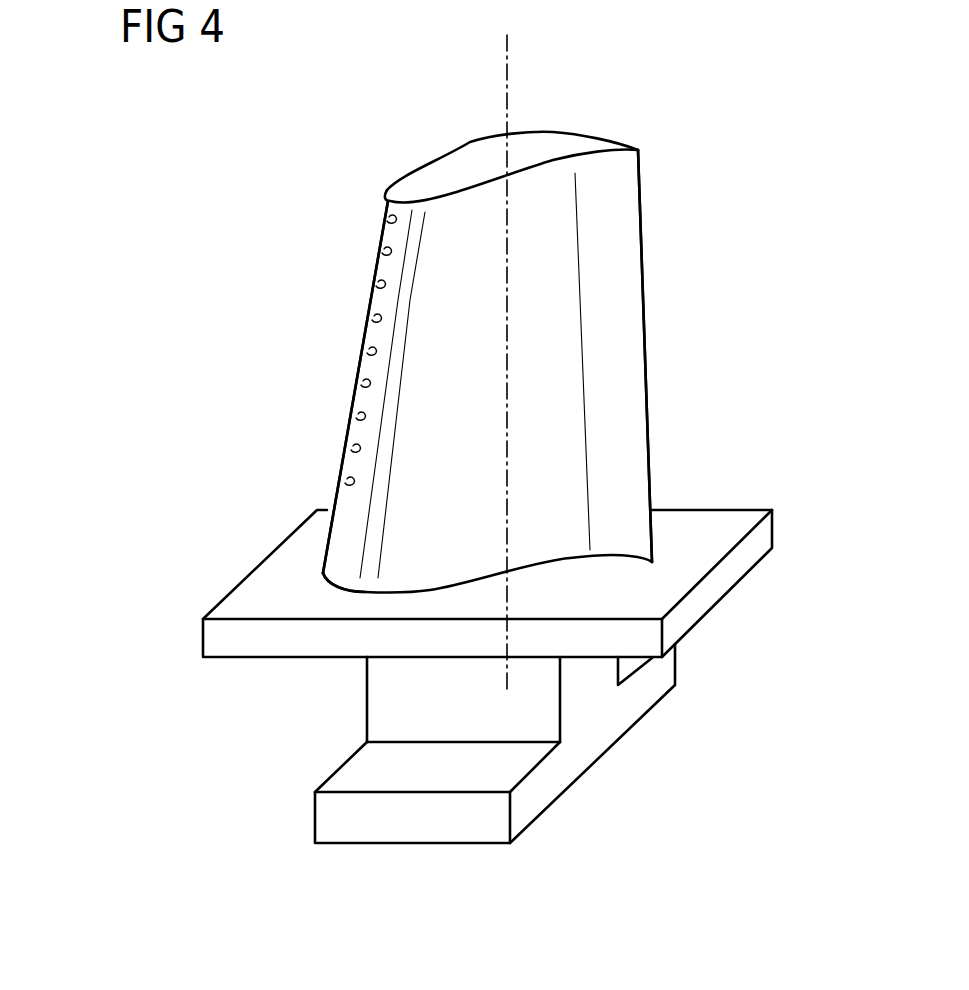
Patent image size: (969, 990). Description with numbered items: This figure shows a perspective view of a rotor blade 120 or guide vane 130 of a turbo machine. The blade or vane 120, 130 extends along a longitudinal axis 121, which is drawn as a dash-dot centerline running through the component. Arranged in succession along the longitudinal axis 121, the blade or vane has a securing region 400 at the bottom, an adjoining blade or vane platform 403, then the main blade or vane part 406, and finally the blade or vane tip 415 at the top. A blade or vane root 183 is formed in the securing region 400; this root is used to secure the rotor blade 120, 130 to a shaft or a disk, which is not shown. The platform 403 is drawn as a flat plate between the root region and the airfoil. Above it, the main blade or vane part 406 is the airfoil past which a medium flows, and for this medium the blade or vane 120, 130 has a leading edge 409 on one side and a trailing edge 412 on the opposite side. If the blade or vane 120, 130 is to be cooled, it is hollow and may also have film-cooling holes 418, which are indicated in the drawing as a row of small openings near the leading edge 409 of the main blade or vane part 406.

The longitudinal axis 121 is at (507, 77).
The rotor blade 120 is at (420, 320).
The guide vane 130 is at (420, 320).
The blade or vane tip 415 is at (415, 182).
The leading edge 409 is at (357, 288).
The trailing edge 412 is at (657, 318).
The film-cooling holes 418 is at (386, 218).
The main blade or vane part 406 is at (343, 552).
The blade or vane platform 403 is at (738, 558).
The securing region 400 is at (485, 743).
The blade or vane root 183 is at (355, 773).